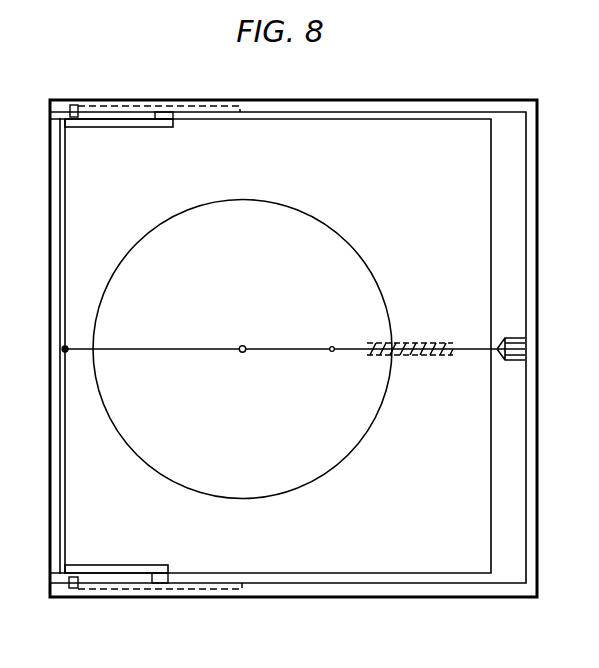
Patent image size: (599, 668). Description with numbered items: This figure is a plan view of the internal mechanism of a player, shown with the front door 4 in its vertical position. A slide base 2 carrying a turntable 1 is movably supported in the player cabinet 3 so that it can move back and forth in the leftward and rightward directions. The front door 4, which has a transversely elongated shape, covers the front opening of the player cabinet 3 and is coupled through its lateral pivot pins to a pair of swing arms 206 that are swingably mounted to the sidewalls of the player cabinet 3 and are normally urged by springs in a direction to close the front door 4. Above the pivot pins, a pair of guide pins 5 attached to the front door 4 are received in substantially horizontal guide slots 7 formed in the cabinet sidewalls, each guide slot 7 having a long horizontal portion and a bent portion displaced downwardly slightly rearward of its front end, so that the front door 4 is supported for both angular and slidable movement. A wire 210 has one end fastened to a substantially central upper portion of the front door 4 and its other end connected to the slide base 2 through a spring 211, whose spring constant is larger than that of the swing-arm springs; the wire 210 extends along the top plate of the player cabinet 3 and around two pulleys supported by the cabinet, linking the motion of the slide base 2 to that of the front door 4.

The turntable 1 is at (351, 253).
The slide base 2 is at (438, 138).
The player cabinet 3 is at (336, 106).
The front door 4 is at (56, 291).
The guide pins 5 is at (73, 106).
The guide slots 7 is at (131, 99).
The swing arms 206 is at (120, 128).
The wire 210 is at (182, 347).
The spring 211 is at (415, 338).